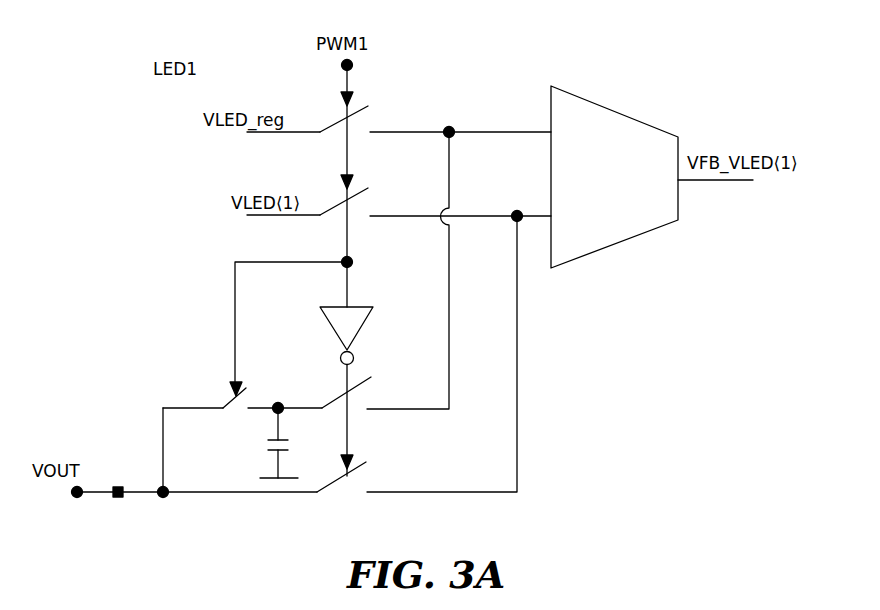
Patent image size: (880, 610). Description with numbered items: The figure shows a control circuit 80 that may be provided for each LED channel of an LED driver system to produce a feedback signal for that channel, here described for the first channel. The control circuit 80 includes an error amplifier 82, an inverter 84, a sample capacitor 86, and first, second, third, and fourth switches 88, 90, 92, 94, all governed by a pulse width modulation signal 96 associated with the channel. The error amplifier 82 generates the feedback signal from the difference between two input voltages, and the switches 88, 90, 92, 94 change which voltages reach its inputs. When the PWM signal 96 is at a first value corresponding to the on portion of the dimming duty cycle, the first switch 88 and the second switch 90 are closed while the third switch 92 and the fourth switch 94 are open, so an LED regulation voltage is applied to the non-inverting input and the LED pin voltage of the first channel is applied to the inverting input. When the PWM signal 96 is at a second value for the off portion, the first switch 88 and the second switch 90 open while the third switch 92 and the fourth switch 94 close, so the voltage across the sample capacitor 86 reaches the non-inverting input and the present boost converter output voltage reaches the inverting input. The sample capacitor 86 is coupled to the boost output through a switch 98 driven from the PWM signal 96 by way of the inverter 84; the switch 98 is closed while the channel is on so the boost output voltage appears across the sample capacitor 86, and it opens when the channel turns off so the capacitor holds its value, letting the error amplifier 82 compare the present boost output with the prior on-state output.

The control circuit 80 is at (531, 44).
The error amplifier 82 is at (623, 112).
The inverter 84 is at (362, 325).
The sample capacitor 86 is at (266, 442).
The first switch 88 is at (360, 120).
The second switch 90 is at (360, 203).
The third switch 92 is at (367, 403).
The fourth switch 94 is at (362, 482).
The pulse width modulation signal 96 is at (342, 66).
The switch 98 is at (225, 402).